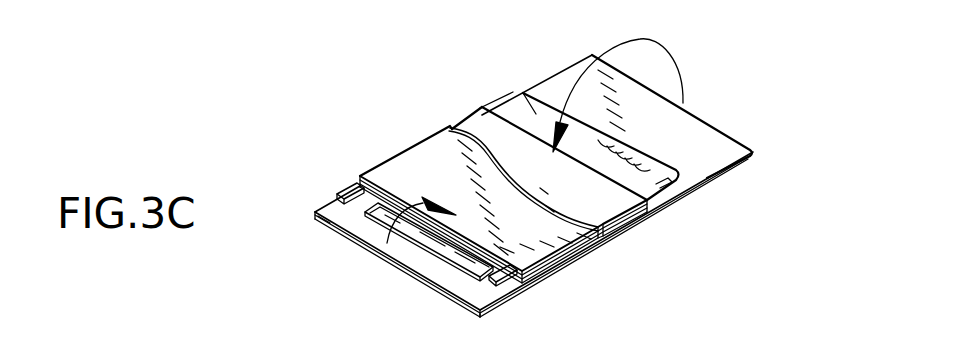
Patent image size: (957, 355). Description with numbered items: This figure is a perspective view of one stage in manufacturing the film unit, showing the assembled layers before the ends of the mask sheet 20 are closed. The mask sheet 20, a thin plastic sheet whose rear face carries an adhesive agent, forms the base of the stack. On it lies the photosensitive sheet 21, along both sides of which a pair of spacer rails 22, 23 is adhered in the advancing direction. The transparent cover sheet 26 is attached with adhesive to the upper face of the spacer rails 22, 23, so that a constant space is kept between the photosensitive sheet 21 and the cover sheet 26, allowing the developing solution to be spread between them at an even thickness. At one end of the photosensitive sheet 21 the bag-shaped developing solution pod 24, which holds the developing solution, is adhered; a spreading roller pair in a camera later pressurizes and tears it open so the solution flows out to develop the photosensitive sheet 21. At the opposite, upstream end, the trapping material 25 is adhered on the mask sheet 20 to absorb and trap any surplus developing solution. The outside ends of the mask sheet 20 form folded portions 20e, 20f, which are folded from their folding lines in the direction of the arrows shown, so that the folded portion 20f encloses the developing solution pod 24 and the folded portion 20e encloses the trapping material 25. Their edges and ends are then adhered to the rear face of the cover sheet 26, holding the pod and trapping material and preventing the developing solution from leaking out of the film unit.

The mask sheet 20 is at (742, 126).
The folded portion 20e is at (367, 230).
The folded portion 20f is at (705, 120).
The photosensitive sheet 21 is at (478, 299).
The spacer rail 22 is at (358, 190).
The spacer rail 23 is at (525, 283).
The developing solution pod 24 is at (518, 92).
The trapping material 25 is at (458, 245).
The transparent cover sheet 26 is at (405, 132).